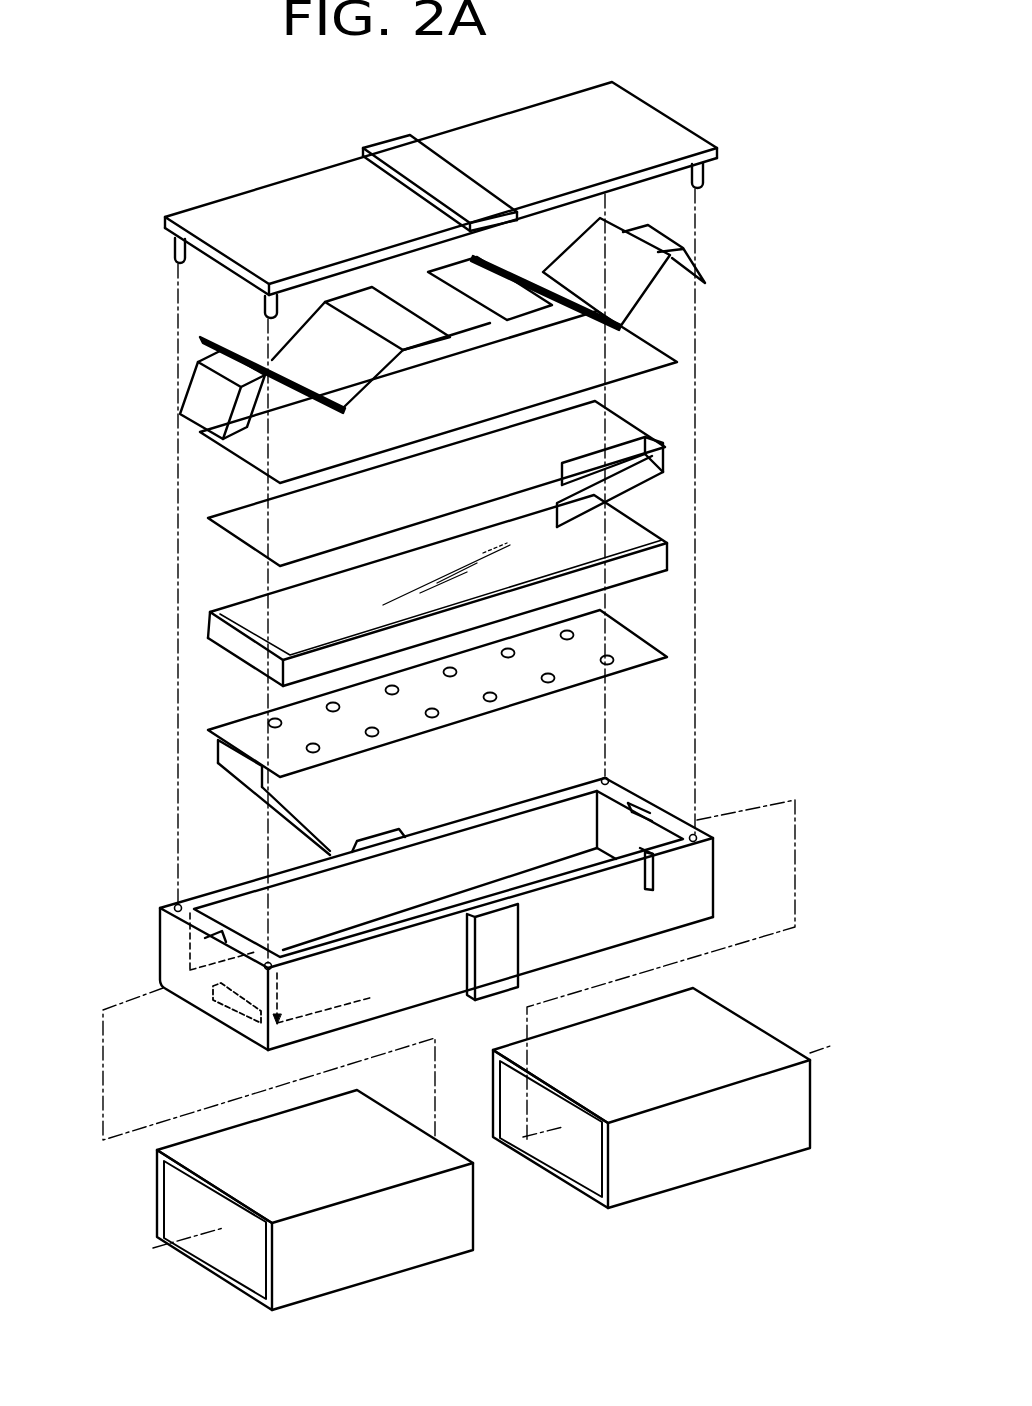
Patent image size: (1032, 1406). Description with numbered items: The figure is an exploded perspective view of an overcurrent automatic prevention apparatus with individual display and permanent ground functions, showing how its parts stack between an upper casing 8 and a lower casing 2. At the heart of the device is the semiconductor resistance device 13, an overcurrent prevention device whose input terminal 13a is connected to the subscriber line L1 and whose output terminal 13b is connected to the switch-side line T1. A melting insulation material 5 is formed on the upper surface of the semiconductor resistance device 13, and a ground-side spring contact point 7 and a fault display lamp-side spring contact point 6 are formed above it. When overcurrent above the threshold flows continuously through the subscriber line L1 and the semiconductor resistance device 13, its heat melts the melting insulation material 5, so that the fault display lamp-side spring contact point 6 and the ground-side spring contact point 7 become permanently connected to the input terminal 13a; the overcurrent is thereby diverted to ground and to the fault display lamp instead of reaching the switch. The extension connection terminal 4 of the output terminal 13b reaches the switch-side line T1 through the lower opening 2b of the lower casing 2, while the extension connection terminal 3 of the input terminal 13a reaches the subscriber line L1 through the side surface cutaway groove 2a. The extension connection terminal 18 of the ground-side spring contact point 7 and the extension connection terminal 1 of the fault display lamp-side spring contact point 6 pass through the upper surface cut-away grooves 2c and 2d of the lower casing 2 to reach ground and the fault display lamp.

The extension connection terminal 1 is at (200, 405).
The lower casing 2 is at (724, 860).
The side surface cutaway groove 2a is at (653, 890).
The lower opening 2b is at (223, 998).
The upper surface cut-away groove 2c is at (657, 813).
The upper surface cut-away groove 2d is at (205, 938).
The extension connection terminal 3 is at (637, 477).
The extension connection terminal 4 is at (262, 795).
The melting insulation material 5 is at (630, 368).
The fault display lamp-side spring contact point 6 is at (280, 343).
The ground-side spring contact point 7 is at (632, 312).
The upper casing 8 is at (483, 135).
The semiconductor resistance device 13 is at (613, 572).
The input terminal 13a is at (237, 533).
The output terminal 13b is at (230, 722).
The extension connection terminal 18 is at (704, 256).
The switch-side line T1 is at (477, 1210).
The subscriber line L1 is at (810, 1097).